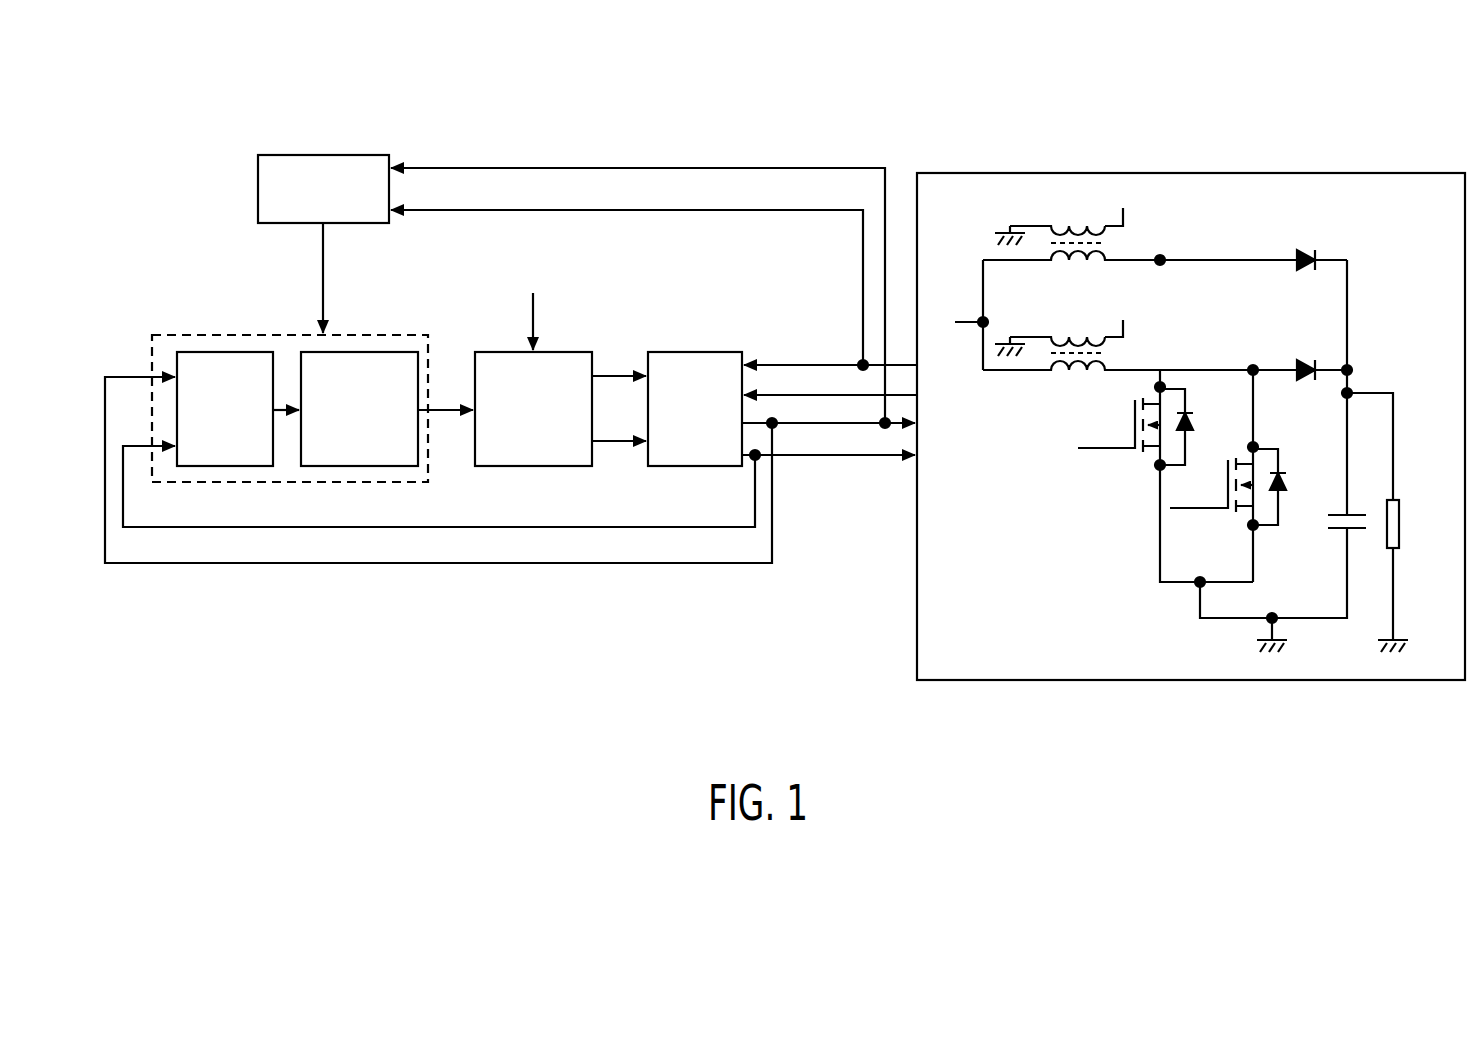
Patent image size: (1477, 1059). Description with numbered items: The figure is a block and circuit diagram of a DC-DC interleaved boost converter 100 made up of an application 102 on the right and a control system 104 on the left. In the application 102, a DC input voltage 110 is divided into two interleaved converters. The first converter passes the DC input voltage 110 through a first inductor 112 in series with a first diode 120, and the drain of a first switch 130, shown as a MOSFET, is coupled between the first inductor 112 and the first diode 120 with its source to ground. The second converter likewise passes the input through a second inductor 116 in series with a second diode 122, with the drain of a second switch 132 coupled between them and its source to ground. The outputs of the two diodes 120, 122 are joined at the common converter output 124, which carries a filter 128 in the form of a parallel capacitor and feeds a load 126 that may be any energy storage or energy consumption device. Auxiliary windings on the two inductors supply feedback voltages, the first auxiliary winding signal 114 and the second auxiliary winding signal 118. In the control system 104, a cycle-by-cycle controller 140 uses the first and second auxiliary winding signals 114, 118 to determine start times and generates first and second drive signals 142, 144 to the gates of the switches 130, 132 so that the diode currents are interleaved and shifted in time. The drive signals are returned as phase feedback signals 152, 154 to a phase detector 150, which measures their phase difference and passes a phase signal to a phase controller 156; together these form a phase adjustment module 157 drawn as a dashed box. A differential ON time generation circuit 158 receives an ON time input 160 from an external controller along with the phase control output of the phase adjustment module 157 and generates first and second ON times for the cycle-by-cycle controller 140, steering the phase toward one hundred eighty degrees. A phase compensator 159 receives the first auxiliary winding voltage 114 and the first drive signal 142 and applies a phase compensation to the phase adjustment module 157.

The DC-DC interleaved boost converter 100 is at (255, 688).
The application 102 is at (1334, 173).
The control system 104 is at (428, 612).
The DC input voltage 110 is at (955, 330).
The first inductor 112 is at (1066, 224).
The AUX 1 signal 114 is at (775, 364).
The second inductor 116 is at (1066, 335).
The AUX 2 signal 118 is at (788, 394).
The first diode 120 is at (1295, 256).
The second diode 122 is at (1295, 366).
The converter output 124 is at (1385, 370).
The load 126 is at (1400, 512).
The filter 128 is at (1340, 533).
The first switch 130 is at (1208, 430).
The second switch 132 is at (1295, 464).
The cycle-by-cycle controller 140 is at (688, 351).
The first drive signal 142 is at (790, 437).
The second drive signal 144 is at (887, 458).
The phase detector 150 is at (258, 351).
The phase feedback signal 152 is at (123, 376).
The phase feedback signal 154 is at (137, 455).
The phase controller 156 is at (365, 350).
The phase adjustment module 157 is at (185, 336).
The differential ON time generation circuit 158 is at (498, 351).
The phase compensator 159 is at (283, 155).
The ON time input 160 is at (537, 290).